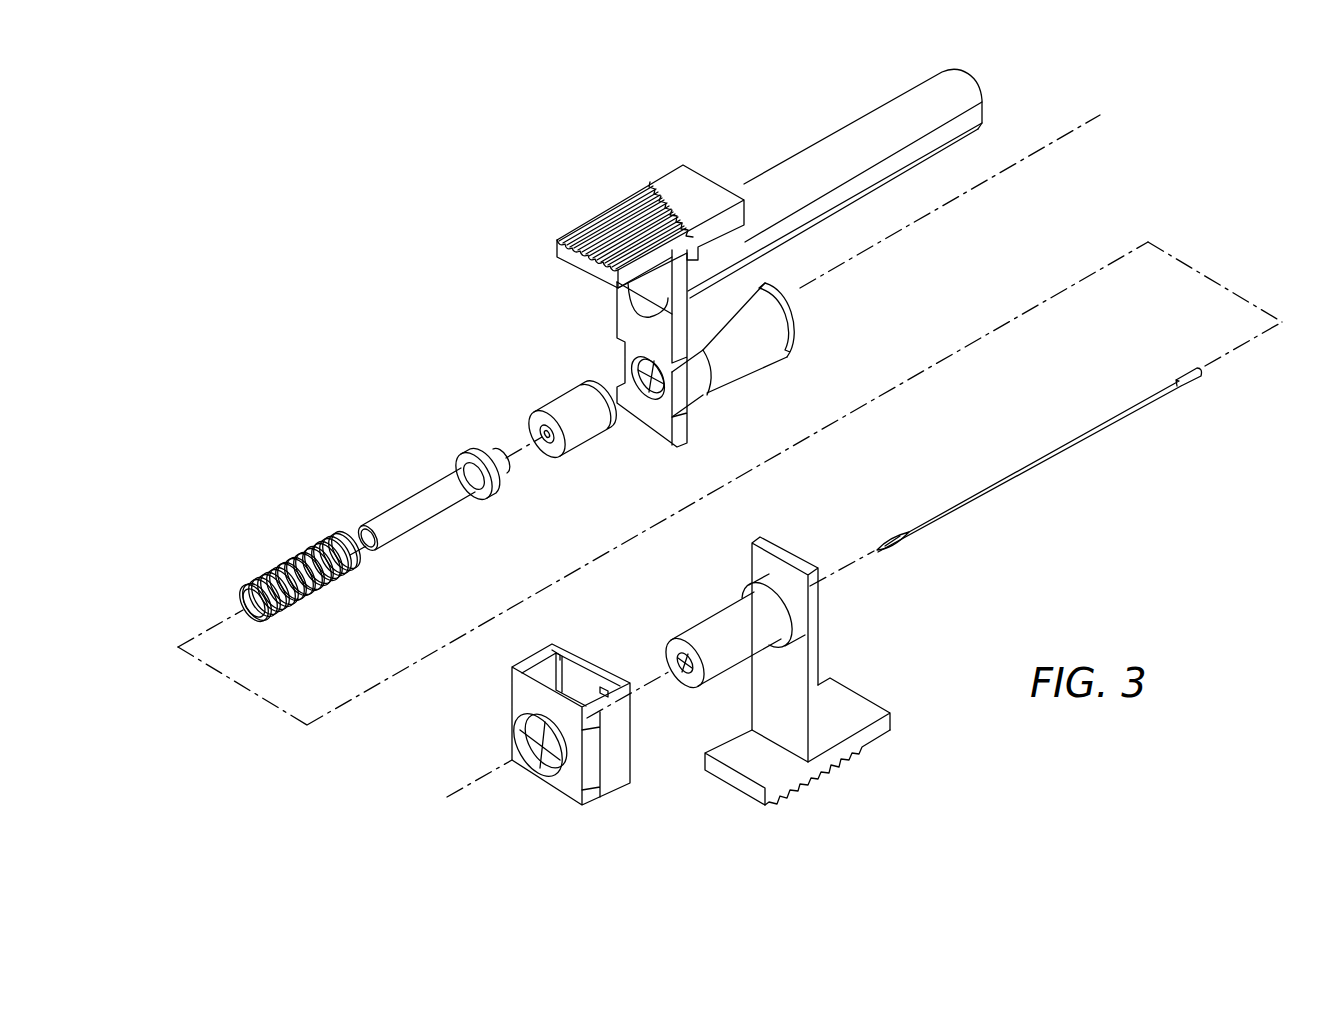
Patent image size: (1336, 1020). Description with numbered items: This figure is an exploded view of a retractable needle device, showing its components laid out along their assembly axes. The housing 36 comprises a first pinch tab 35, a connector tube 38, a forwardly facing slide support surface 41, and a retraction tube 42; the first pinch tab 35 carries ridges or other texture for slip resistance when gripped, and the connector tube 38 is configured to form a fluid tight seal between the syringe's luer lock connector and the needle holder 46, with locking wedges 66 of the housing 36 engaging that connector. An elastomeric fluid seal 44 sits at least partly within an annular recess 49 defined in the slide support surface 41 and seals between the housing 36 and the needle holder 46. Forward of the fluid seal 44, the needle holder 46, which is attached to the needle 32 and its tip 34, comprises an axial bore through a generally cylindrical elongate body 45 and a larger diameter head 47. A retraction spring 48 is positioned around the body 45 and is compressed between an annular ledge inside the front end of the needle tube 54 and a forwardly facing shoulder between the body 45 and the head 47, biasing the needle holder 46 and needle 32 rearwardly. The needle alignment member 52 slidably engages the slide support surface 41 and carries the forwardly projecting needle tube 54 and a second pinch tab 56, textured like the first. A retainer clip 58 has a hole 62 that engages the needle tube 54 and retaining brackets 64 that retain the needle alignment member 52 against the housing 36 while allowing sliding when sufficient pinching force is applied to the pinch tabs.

The needle 32 is at (1050, 452).
The needle tip 34 is at (888, 540).
The first pinch tab 35 is at (630, 212).
The housing 36 is at (652, 142).
The connector tube 38 is at (745, 354).
The slide support surface 41 is at (625, 316).
The retraction tube 42 is at (868, 125).
The fluid seal 44 is at (562, 406).
The body 45 is at (429, 516).
The needle holder 46 is at (395, 462).
The head 47 is at (477, 458).
The retraction spring 48 is at (292, 573).
The annular recess 49 is at (648, 392).
The needle alignment member 52 is at (852, 788).
The needle tube 54 is at (722, 617).
The second pinch tab 56 is at (735, 778).
The retainer clip 58 is at (486, 719).
The hole 62 is at (532, 770).
The retaining brackets 64 is at (560, 655).
The locking wedges 66 is at (806, 318).